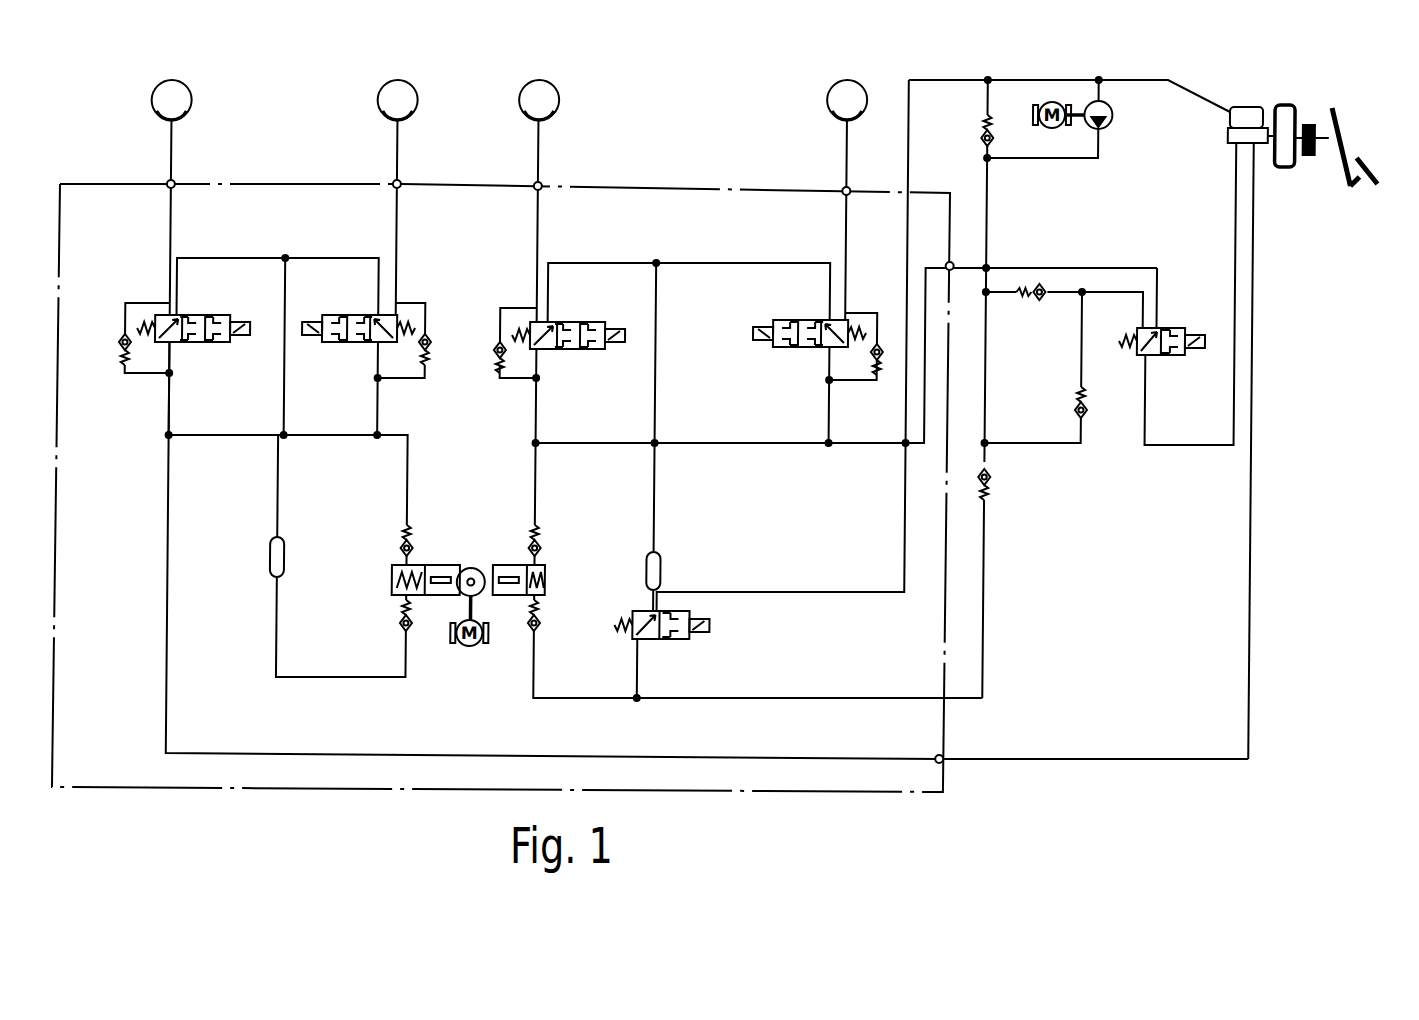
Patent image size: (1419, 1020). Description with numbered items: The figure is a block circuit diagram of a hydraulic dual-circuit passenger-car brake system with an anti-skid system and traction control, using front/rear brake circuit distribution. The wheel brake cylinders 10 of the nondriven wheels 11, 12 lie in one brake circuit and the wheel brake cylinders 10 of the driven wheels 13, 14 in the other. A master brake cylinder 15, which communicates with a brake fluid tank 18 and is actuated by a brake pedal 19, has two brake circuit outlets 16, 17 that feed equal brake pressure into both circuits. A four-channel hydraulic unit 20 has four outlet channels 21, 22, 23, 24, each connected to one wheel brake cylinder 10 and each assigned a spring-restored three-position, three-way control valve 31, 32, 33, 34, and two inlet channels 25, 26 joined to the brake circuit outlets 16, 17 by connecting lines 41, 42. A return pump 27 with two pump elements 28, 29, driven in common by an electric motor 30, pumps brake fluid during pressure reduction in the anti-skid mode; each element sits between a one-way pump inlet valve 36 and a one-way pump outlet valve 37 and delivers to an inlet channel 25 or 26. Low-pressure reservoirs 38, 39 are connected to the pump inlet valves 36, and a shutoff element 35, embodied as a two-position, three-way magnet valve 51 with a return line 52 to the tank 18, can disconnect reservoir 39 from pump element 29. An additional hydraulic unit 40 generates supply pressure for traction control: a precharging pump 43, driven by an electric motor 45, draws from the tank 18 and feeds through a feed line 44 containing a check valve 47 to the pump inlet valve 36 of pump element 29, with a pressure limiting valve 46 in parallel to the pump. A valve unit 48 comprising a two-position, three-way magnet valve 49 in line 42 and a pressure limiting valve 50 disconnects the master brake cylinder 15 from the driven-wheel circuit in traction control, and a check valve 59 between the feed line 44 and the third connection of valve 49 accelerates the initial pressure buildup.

The wheel brake cylinder 10 is at (181, 116).
The nondriven wheel 11 is at (173, 90).
The nondriven wheel 12 is at (399, 90).
The driven wheel 13 is at (544, 90).
The driven wheel 14 is at (851, 90).
The master brake cylinder 15 is at (1225, 133).
The brake circuit outlet 16 is at (1258, 147).
The brake circuit outlet 17 is at (1232, 145).
The brake fluid tank 18 is at (1244, 112).
The brake pedal 19 is at (1346, 188).
The four-channel hydraulic unit 20 is at (294, 187).
The outlet channel 21 is at (172, 189).
The outlet channel 22 is at (398, 189).
The outlet channel 23 is at (539, 190).
The outlet channel 24 is at (846, 196).
The inlet channel 25 is at (946, 757).
The inlet channel 26 is at (947, 262).
The return pump 27 is at (462, 650).
The pump element 28 is at (413, 563).
The pump element 29 is at (499, 563).
The electric motor 30 is at (477, 647).
The control valve 31 is at (207, 344).
The control valve 32 is at (340, 345).
The control valve 33 is at (583, 350).
The control valve 34 is at (790, 348).
The shutoff element 35 is at (668, 642).
The pump inlet valve 36 is at (401, 626).
The pump outlet valve 37 is at (401, 548).
The low-pressure reservoir 38 is at (270, 560).
The low-pressure reservoir 39 is at (662, 559).
The additional hydraulic unit 40 is at (1062, 228).
The connecting line 41 is at (1253, 568).
The connecting line 42 is at (1232, 275).
The precharging pump 43 is at (1110, 122).
The feed line 44 is at (986, 642).
The electric motor 45 is at (1046, 125).
The pressure limiting valve 46 is at (980, 141).
The check valve 47 is at (989, 485).
The valve unit 48 is at (1111, 310).
The 3/2-way magnet valve 49 is at (1168, 357).
The pressure limiting valve 50 is at (1038, 300).
The 3/2-way magnet valve 51 is at (650, 648).
The return line 52 is at (903, 527).
The check valve 59 is at (1083, 420).